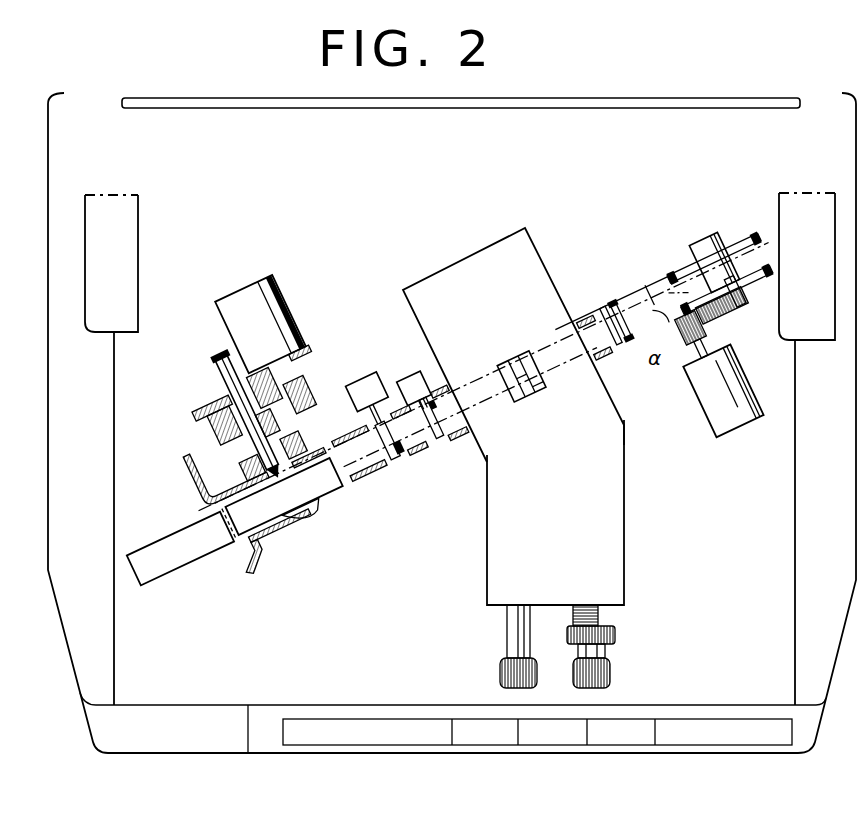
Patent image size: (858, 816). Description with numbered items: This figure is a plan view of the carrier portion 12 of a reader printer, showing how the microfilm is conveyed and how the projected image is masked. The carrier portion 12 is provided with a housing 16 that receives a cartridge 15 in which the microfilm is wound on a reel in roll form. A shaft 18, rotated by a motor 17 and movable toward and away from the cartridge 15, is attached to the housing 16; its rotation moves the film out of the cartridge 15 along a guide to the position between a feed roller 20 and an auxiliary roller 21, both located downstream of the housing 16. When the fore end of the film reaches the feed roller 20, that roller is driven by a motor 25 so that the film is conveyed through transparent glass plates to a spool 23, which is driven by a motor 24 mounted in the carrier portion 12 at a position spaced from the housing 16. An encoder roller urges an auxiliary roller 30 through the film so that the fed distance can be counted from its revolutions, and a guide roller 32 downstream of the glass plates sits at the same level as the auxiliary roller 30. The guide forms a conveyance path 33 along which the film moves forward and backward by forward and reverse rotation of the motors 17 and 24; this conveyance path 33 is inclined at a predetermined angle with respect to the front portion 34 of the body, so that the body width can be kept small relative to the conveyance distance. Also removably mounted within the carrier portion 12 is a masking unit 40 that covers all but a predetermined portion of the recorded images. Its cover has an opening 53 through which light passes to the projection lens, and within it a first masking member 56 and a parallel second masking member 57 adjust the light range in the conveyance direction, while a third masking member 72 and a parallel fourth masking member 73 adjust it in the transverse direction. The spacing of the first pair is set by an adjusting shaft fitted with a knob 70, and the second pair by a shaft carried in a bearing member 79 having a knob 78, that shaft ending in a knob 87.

The carrier portion 12 is at (428, 252).
The cartridge 15 is at (195, 556).
The housing 16 is at (290, 528).
The motor 17 is at (292, 308).
The shaft 18 is at (222, 366).
The feed roller 20 is at (400, 447).
The auxiliary roller 21 is at (392, 452).
The spool 23 is at (738, 243).
The motor 24 is at (700, 400).
The motor 25 is at (362, 387).
The auxiliary roller 30 is at (452, 392).
The guide roller 32 is at (612, 320).
The conveyance path 33 is at (446, 450).
The front portion 34 is at (184, 735).
The masking unit 40 is at (631, 513).
The opening 53 is at (530, 397).
The first masking member 56 is at (512, 392).
The second masking member 57 is at (542, 383).
The knob 70 is at (500, 670).
The third masking member 72 is at (548, 392).
The fourth masking member 73 is at (513, 356).
The knob 78 is at (616, 634).
The bearing member 79 is at (576, 612).
The knob 87 is at (614, 672).